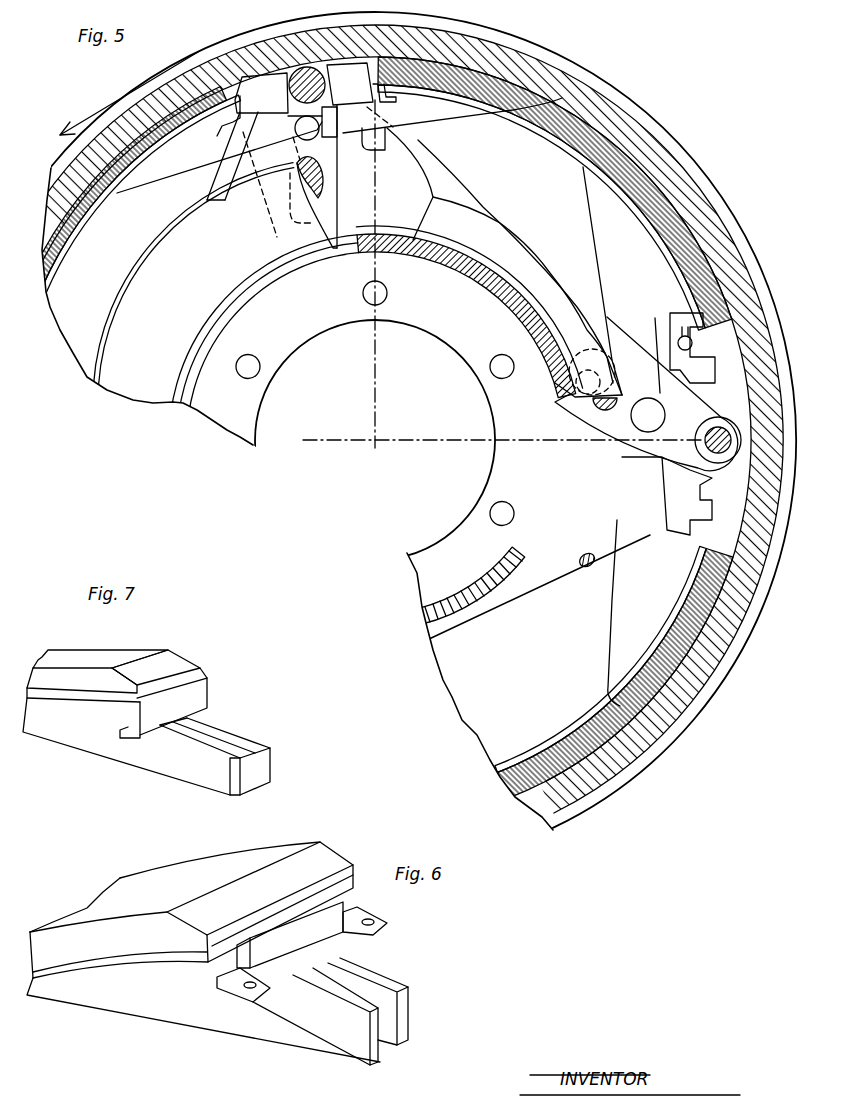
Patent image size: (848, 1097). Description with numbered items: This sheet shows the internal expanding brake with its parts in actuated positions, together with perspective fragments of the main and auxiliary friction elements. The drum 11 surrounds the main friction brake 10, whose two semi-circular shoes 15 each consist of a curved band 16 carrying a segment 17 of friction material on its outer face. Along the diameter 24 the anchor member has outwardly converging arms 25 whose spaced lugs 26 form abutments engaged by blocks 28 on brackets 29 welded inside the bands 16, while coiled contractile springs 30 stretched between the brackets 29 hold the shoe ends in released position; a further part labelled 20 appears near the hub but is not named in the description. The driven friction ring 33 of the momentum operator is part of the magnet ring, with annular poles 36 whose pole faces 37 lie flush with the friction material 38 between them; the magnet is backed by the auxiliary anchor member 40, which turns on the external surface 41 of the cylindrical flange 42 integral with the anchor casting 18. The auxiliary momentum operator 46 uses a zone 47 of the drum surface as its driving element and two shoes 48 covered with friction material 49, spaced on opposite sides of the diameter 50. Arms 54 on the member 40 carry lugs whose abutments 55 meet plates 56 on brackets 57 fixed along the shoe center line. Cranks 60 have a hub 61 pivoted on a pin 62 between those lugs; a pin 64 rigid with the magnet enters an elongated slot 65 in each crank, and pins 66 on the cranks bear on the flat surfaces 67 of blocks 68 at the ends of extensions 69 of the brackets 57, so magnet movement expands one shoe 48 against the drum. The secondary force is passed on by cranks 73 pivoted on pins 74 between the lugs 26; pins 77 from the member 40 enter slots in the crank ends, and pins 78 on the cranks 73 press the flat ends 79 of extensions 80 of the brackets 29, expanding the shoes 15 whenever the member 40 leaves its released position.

In FIG. 5, the main friction brake 10 is at (677, 122).
In FIG. 5, the drum 11 is at (636, 128).
In FIG. 5, the semi-circular shoes 15 is at (607, 180).
In FIG. 6, the semi-circular shoes 15 is at (339, 851).
In FIG. 5, the curved band 16 is at (645, 211).
In FIG. 6, the curved band 16 is at (152, 957).
In FIG. 5, the segment of friction material 17 is at (662, 228).
In FIG. 6, the segment of friction material 17 is at (264, 846).
In FIG. 5, the anchor casting 18 is at (518, 600).
In FIG. 5, the hub opening 20 is at (287, 335).
In FIG. 5, the diameter 24 is at (470, 438).
In FIG. 5, the outwardly converging arms 25 is at (627, 330).
In FIG. 5, the spaced lugs 26 is at (700, 358).
In FIG. 5, the blocks 28 is at (685, 318).
In FIG. 6, the blocks 28 is at (340, 945).
In FIG. 5, the brackets 29 is at (606, 250).
In FIG. 6, the brackets 29 is at (98, 1000).
In FIG. 5, the coiled contractile springs 30 is at (693, 345).
In FIG. 5, the driven friction ring 33 is at (185, 242).
In FIG. 5, the annular poles 36 is at (123, 290).
In FIG. 5, the pole faces 37 is at (190, 340).
In FIG. 5, the friction material 38 is at (133, 316).
In FIG. 5, the auxiliary anchor member 40 is at (412, 260).
In FIG. 5, the external surface 41 is at (432, 272).
In FIG. 5, the cylindrical flange 42 is at (450, 280).
In FIG. 5, the auxiliary momentum operator 46 is at (291, 48).
In FIG. 5, the zone of the internal drum surface 47 is at (262, 72).
In FIG. 5, the semi-circular shoes 48 is at (104, 200).
In FIG. 7, the semi-circular shoes 48 is at (130, 648).
In FIG. 5, the friction material 49 is at (98, 212).
In FIG. 7, the friction material 49 is at (150, 652).
In FIG. 5, the diameter 50 is at (372, 356).
In FIG. 5, the arms 54 is at (430, 141).
In FIG. 5, the abutments 55 is at (232, 86).
In FIG. 5, the plates 56 is at (232, 124).
In FIG. 7, the plates 56 is at (200, 688).
In FIG. 5, the brackets 57 is at (182, 165).
In FIG. 7, the brackets 57 is at (72, 737).
In FIG. 5, the cranks 60 is at (338, 222).
In FIG. 5, the hub 61 is at (290, 88).
In FIG. 5, the pin 62 is at (320, 80).
In FIG. 5, the pin 64 is at (320, 180).
In FIG. 5, the elongated slot 65 is at (320, 204).
In FIG. 5, the pins 66 is at (315, 137).
In FIG. 5, the flat surfaces 67 is at (334, 118).
In FIG. 7, the flat surfaces 67 is at (265, 770).
In FIG. 5, the blocks 68 is at (333, 135).
In FIG. 7, the blocks 68 is at (260, 750).
In FIG. 5, the extensions 69 is at (368, 140).
In FIG. 7, the extensions 69 is at (217, 745).
In FIG. 5, the cranks 73 is at (600, 460).
In FIG. 5, the pins 74 is at (696, 443).
In FIG. 5, the pins 77 is at (603, 441).
In FIG. 5, the pins 78 is at (666, 416).
In FIG. 5, the flat ends 79 is at (658, 398).
In FIG. 6, the flat ends 79 is at (405, 1016).
In FIG. 5, the extensions 80 is at (630, 480).
In FIG. 6, the extensions 80 is at (365, 1010).